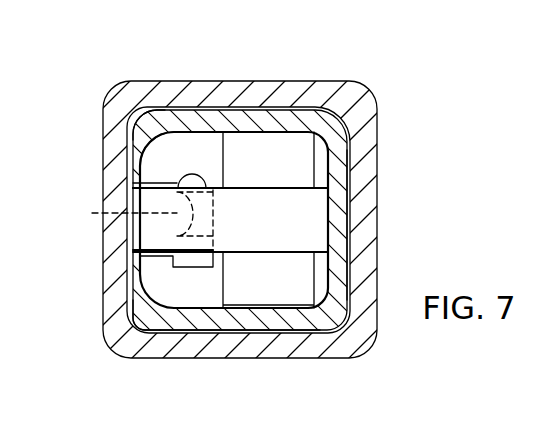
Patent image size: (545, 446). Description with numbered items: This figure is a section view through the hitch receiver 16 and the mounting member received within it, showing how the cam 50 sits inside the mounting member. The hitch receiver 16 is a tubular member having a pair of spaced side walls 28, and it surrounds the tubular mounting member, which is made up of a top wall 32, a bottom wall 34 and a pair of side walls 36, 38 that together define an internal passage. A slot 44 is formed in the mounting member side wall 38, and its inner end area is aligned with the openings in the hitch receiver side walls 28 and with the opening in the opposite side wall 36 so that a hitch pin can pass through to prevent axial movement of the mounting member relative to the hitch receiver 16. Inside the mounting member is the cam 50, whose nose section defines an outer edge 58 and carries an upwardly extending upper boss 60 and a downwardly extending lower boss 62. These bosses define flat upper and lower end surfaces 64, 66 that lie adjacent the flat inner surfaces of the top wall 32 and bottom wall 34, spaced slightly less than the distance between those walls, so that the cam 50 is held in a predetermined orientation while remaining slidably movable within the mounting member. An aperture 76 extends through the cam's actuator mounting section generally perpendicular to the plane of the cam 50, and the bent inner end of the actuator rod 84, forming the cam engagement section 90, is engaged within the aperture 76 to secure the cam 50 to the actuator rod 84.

The hitch receiver 16 is at (379, 195).
The side walls of hitch receiver 28 is at (123, 187).
The top wall of mounting member 32 is at (198, 173).
The bottom wall of mounting member 34 is at (217, 320).
The side wall of mounting member 36 is at (348, 168).
The side wall of mounting member 38 is at (143, 170).
The slot 44 is at (130, 251).
The cam 50 is at (174, 159).
The outer edge of nose section 58 is at (285, 225).
The upper boss 60 is at (287, 155).
The lower boss 62 is at (297, 293).
The upper end surface 64 is at (250, 125).
The lower end surface 66 is at (262, 300).
The aperture 76 is at (92, 213).
The actuator rod 84 is at (145, 103).
The cam engagement section 90 is at (131, 318).